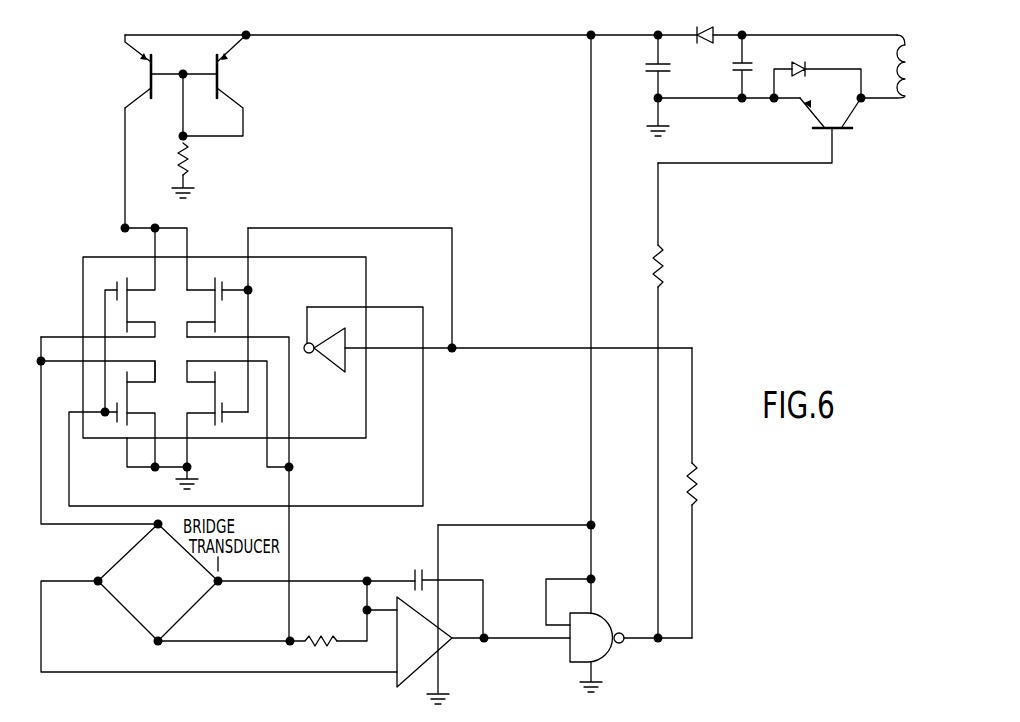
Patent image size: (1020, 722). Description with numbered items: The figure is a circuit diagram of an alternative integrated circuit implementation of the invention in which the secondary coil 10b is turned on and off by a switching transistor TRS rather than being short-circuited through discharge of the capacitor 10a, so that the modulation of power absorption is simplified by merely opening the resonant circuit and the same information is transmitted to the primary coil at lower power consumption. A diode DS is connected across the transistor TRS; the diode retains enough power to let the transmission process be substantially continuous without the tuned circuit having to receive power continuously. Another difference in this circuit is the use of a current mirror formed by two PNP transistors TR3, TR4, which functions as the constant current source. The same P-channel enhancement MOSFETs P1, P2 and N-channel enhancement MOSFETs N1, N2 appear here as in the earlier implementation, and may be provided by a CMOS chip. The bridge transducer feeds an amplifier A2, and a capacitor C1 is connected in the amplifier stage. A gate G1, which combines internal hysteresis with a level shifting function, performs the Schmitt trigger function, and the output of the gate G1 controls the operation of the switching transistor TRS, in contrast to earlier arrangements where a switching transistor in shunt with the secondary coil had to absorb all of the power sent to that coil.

The PNP transistor TR3 is at (151, 71).
The PNP transistor TR4 is at (225, 105).
The switching transistor TRS is at (843, 121).
The P-channel enhancement MOSFET P1 is at (217, 320).
The P-channel enhancement MOSFET P2 is at (98, 320).
The N-channel enhancement MOSFET N1 is at (217, 414).
The N-channel enhancement MOSFET N2 is at (130, 414).
The diode DS is at (817, 71).
The capacitor C1 is at (440, 593).
The amplifier A2 is at (483, 642).
The gate G1 is at (631, 637).
The capacitor 10a is at (727, 68).
The secondary coil 10b is at (904, 50).